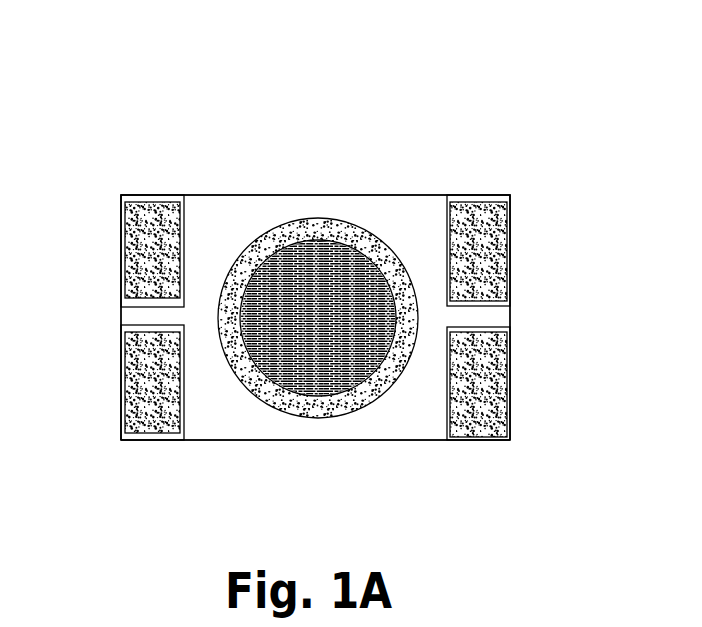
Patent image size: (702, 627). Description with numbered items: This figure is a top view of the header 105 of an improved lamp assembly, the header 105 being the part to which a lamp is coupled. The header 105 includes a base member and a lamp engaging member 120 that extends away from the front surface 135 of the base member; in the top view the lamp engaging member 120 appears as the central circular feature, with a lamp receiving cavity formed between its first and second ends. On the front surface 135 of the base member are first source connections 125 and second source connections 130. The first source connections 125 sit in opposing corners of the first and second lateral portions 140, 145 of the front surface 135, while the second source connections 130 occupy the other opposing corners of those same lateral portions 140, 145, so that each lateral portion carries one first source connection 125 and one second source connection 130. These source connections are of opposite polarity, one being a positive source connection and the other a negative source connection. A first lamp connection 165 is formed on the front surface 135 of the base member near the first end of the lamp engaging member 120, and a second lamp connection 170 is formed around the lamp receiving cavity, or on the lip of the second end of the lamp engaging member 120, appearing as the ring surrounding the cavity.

The header 105 is at (198, 60).
The lamp engaging member 120 is at (256, 413).
The first source connections 125 is at (152, 252).
The second source connections 130 is at (478, 252).
The front surface 135 is at (316, 428).
The first lateral portion 140 is at (196, 211).
The second lateral portion 145 is at (414, 212).
The first lamp connection 165 is at (342, 352).
The second lamp connection 170 is at (333, 229).